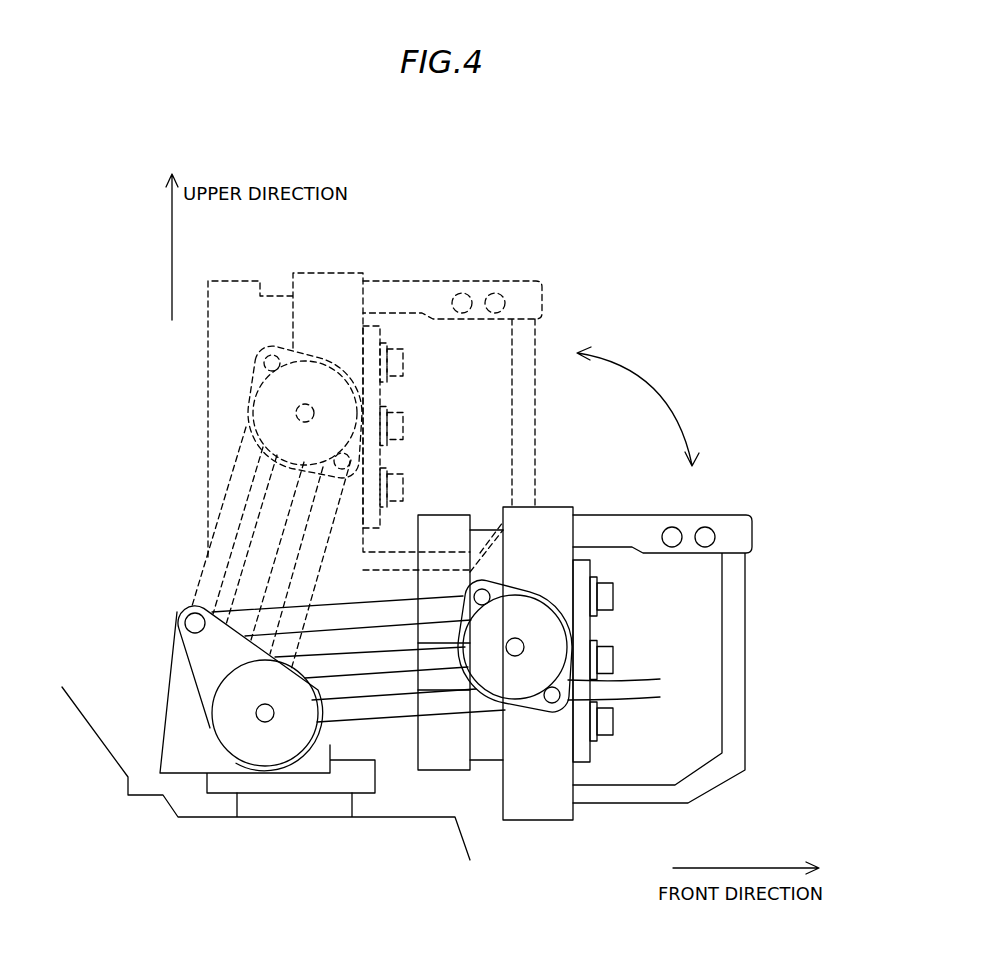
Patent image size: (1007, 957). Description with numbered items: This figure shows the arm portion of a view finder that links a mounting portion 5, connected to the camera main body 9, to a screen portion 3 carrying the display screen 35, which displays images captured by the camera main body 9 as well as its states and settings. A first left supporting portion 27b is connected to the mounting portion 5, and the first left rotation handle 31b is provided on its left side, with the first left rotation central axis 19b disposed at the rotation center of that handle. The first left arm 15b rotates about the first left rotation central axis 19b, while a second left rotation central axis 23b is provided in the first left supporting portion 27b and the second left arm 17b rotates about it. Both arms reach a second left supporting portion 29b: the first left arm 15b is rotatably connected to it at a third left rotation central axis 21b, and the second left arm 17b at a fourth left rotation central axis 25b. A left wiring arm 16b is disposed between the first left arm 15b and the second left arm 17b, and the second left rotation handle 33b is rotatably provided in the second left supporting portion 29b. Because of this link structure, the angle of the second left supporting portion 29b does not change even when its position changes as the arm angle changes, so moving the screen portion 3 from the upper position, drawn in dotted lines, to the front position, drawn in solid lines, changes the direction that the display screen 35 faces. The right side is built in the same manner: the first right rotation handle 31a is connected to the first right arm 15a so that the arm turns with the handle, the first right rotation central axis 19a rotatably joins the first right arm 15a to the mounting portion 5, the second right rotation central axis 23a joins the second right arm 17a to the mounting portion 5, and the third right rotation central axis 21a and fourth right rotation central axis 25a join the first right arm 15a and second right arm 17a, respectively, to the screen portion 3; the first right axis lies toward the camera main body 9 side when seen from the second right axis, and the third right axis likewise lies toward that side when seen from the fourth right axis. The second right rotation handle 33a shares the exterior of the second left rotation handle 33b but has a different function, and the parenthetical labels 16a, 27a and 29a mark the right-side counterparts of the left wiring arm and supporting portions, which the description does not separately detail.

The screen portion 3 is at (535, 808).
The mounting portion 5 is at (183, 723).
The camera main body 9 is at (233, 828).
The first right arm 15a is at (353, 707).
The first left arm 15b is at (394, 793).
The second belt 16a is at (407, 660).
The left wiring arm 16b is at (413, 787).
The second right arm 17a is at (447, 607).
The second left arm 17b is at (453, 706).
The first right rotation central axis 19a is at (256, 713).
The first left rotation central axis 19b is at (181, 713).
The third right rotation central axis 21a is at (660, 697).
The third left rotation central axis 21b is at (703, 705).
The second right rotation central axis 23a is at (177, 614).
The second left rotation central axis 23b is at (184, 674).
The fourth right rotation central axis 25a is at (500, 601).
The fourth left rotation central axis 25b is at (648, 646).
The upper belt 27a is at (341, 616).
The first left supporting portion 27b is at (258, 626).
The belt end 29a is at (660, 679).
The second left supporting portion 29b is at (704, 678).
The first right rotation handle 31a is at (371, 662).
The first left rotation handle 31b is at (256, 662).
The second right rotation handle 33a is at (662, 659).
The second left rotation handle 33b is at (690, 659).
The display screen 35 is at (583, 785).